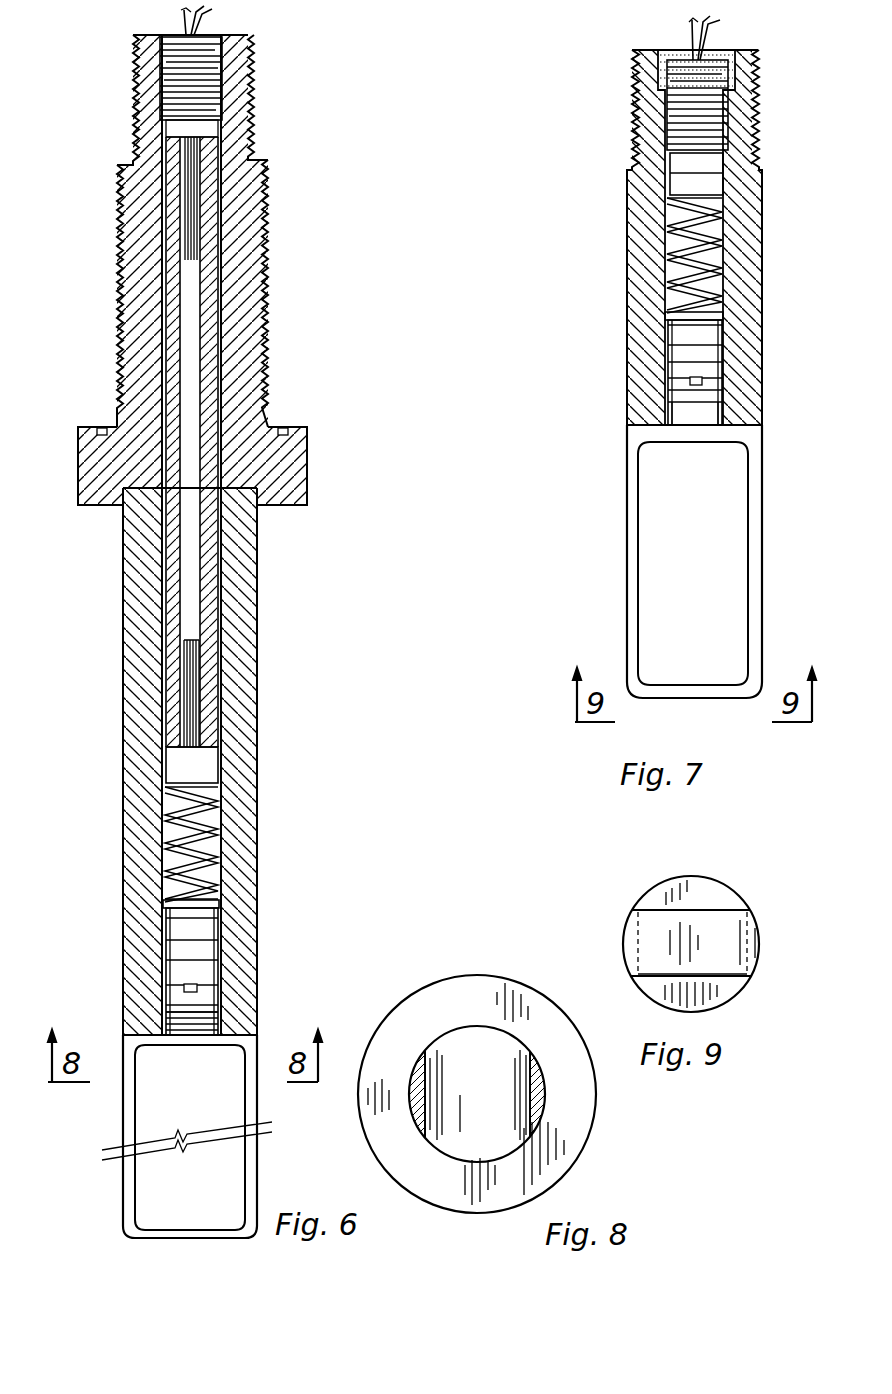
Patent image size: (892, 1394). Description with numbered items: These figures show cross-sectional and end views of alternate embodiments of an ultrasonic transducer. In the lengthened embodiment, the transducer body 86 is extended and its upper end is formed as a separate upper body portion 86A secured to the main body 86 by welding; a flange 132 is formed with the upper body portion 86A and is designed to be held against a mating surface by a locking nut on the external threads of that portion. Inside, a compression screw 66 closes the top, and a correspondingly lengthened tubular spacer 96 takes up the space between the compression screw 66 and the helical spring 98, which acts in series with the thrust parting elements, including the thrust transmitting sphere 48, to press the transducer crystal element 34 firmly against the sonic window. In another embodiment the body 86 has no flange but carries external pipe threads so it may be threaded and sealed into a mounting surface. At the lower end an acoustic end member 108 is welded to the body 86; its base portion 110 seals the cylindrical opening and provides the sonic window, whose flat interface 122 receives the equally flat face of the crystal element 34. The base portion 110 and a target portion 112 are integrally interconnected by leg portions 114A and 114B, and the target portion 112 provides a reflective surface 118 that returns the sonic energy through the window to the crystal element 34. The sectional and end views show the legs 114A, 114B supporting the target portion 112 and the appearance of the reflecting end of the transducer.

In FIG. 7, the transducer crystal element 34 is at (705, 418).
In FIG. 7, the thrust transmitting sphere 48 is at (703, 383).
In FIG. 6, the compression screw 66 is at (278, 99).
In FIG. 7, the compression screw 66 is at (733, 108).
In FIG. 6, the transducer body 86 is at (237, 682).
In FIG. 7, the transducer body 86 is at (737, 326).
In FIG. 9, the transducer body 86 is at (745, 894).
In FIG. 6, the upper body portion 86A is at (250, 333).
In FIG. 6, the tubular spacer 96 is at (207, 590).
In FIG. 6, the helical spring 98 is at (210, 845).
In FIG. 7, the helical spring 98 is at (718, 228).
In FIG. 6, the acoustic end member 108 is at (112, 1117).
In FIG. 6, the base portion 110 is at (217, 1050).
In FIG. 7, the base portion 110 is at (690, 433).
In FIG. 8, the base portion 110 is at (460, 1135).
In FIG. 9, the base portion 110 is at (708, 893).
In FIG. 6, the target portion 112 is at (165, 1233).
In FIG. 7, the target portion 112 is at (695, 705).
In FIG. 9, the target portion 112 is at (713, 965).
In FIG. 6, the leg portion 114A is at (128, 1184).
In FIG. 7, the leg portion 114A is at (633, 570).
In FIG. 8, the leg portion 114A is at (410, 1110).
In FIG. 6, the leg portion 114B is at (248, 1108).
In FIG. 7, the leg portion 114B is at (755, 548).
In FIG. 8, the leg portion 114B is at (537, 1093).
In FIG. 6, the reflective surface 118 is at (197, 1227).
In FIG. 7, the reflective surface 118 is at (673, 686).
In FIG. 6, the interface 122 is at (140, 1024).
In FIG. 6, the flange 132 is at (282, 453).
In FIG. 8, the flange 132 is at (418, 997).